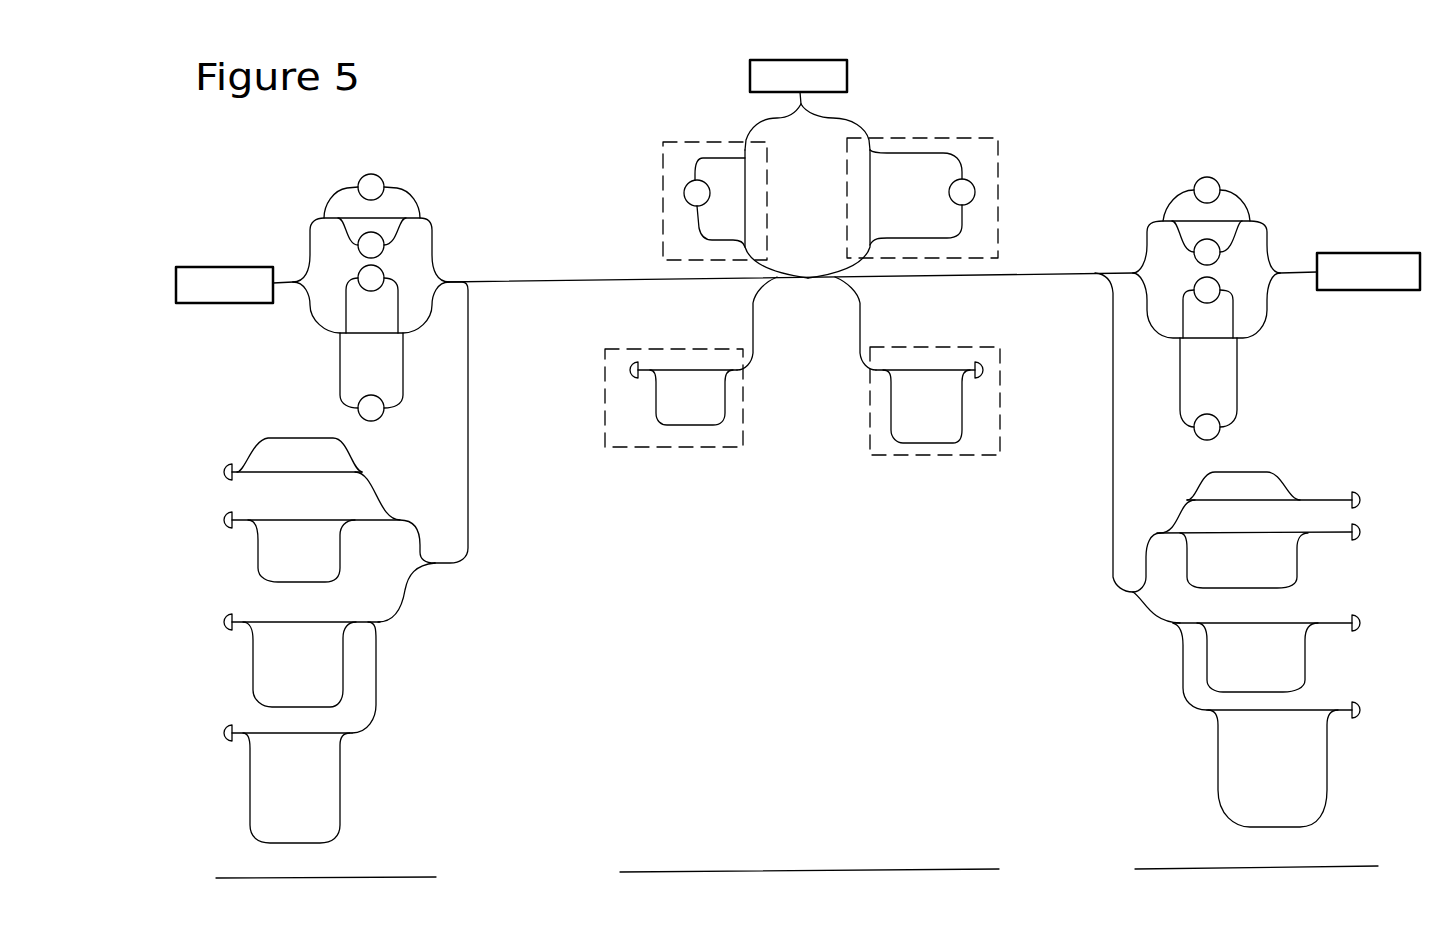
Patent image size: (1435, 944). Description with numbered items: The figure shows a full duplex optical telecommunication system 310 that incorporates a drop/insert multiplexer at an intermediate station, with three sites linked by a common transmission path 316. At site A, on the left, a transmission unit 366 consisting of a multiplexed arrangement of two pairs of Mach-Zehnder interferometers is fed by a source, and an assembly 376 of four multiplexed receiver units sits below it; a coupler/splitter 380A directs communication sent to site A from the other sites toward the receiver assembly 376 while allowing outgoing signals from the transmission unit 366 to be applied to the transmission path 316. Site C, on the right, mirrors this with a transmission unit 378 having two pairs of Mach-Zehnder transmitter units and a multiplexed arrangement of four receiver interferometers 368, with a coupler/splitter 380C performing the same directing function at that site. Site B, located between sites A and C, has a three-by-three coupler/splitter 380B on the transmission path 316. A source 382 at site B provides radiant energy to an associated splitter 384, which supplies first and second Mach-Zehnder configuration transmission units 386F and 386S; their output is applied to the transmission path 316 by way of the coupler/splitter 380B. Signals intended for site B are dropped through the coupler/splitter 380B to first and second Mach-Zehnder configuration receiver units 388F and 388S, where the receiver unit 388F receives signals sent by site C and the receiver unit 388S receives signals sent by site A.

The optical telecommunication system 310 is at (532, 66).
The transmission path 316 is at (582, 283).
The transmission unit 366 is at (435, 229).
The assembly of four multiplexed receiver units 376 is at (443, 563).
The transmission unit 378 is at (1272, 228).
The multiplexed arrangement of four receiver interferometers 368 is at (1138, 610).
The coupler/splitter 380A is at (493, 278).
The 3×3 coupler/splitter 380B is at (810, 280).
The coupler/splitter 380C is at (1097, 265).
The source 382 is at (848, 66).
The splitter 384 is at (818, 110).
The first Mach-Zehnder configuration transmission unit 386F is at (671, 140).
The second Mach-Zehnder configuration transmission unit 386S is at (994, 138).
The first Mach-Zehnder configuration receiver unit 388F is at (692, 449).
The second Mach-Zehnder configuration receiver unit 388S is at (957, 458).